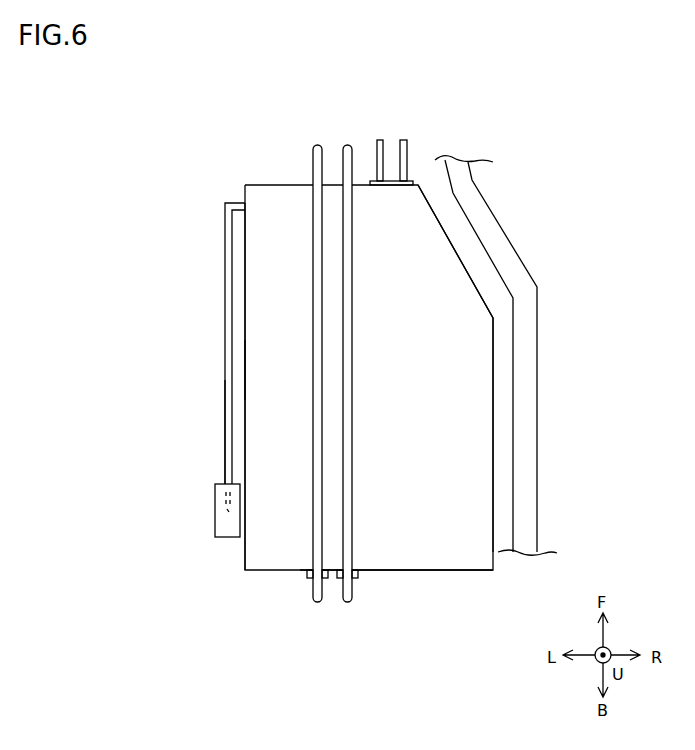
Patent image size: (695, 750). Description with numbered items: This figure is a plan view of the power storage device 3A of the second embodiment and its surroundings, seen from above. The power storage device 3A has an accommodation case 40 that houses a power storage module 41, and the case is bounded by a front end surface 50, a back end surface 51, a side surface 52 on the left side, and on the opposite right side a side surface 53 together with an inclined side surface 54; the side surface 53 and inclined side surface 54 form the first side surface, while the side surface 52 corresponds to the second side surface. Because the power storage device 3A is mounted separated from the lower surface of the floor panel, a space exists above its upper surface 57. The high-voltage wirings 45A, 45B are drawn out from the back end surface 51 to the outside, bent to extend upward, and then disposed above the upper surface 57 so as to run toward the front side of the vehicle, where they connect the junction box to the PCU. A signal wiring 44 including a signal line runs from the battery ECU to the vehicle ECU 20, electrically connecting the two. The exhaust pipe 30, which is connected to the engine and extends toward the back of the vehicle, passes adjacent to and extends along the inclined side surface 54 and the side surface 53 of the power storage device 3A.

The front end surface 50 is at (264, 185).
The back end surface 51 is at (457, 573).
The upper surface 57 is at (418, 368).
The accommodation case 40 is at (272, 300).
The power storage module 41 is at (270, 365).
The power storage device 3A is at (245, 266).
The side surface 52 is at (243, 337).
The signal wiring 44 is at (225, 422).
The ECU 20 is at (215, 538).
The high-voltage wiring 45A is at (315, 143).
The high-voltage wiring 45B is at (349, 143).
The exhaust pipe 30 is at (510, 356).
The inclined side surface 54 is at (458, 252).
The side surface 53 is at (493, 455).